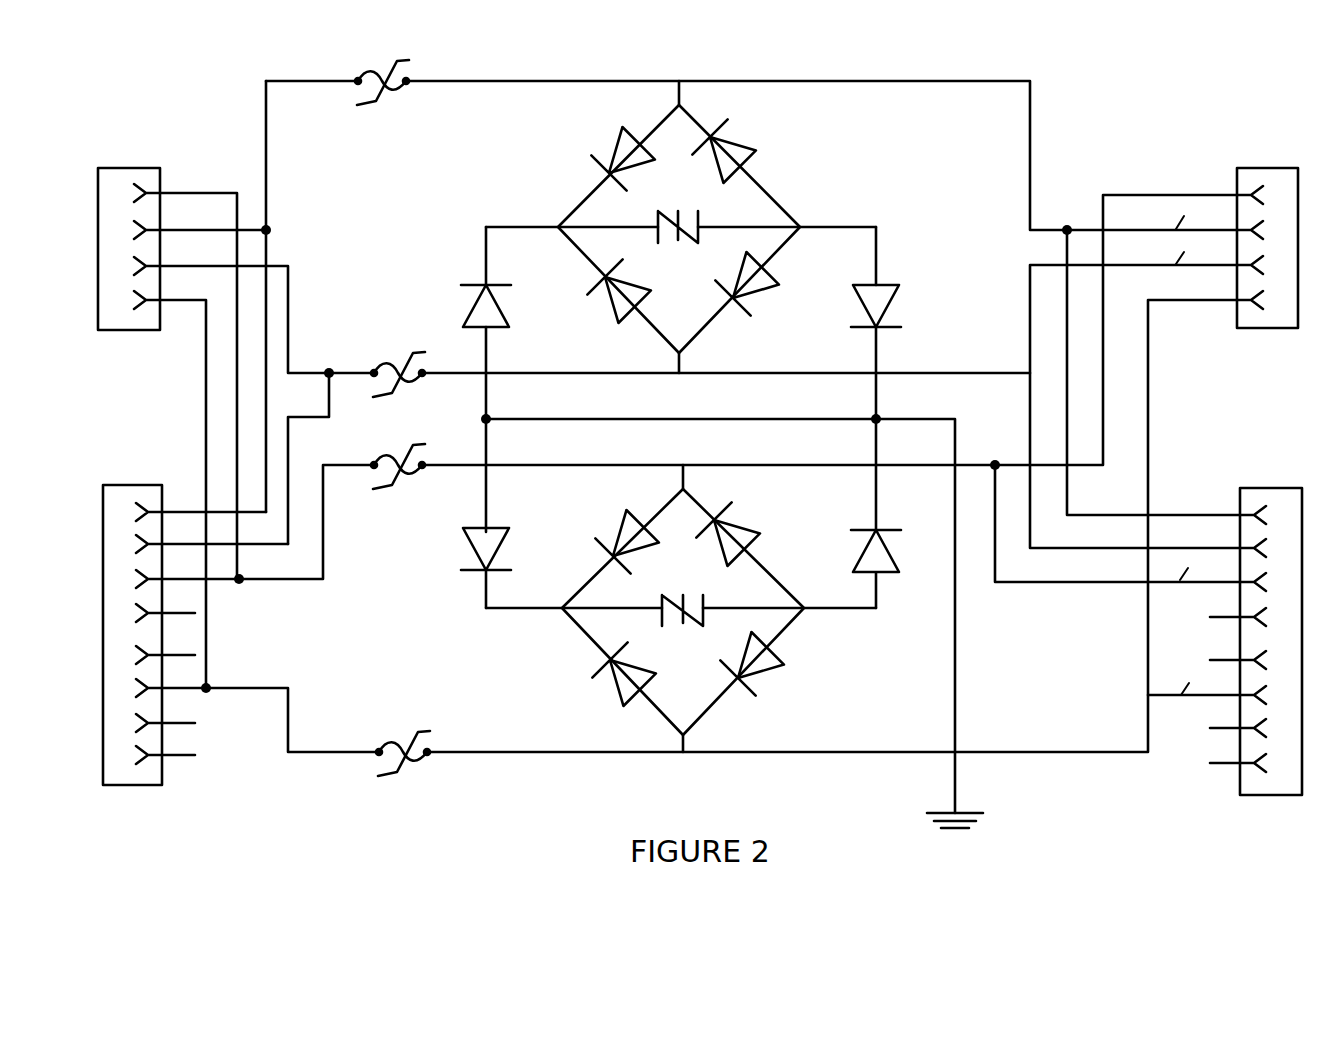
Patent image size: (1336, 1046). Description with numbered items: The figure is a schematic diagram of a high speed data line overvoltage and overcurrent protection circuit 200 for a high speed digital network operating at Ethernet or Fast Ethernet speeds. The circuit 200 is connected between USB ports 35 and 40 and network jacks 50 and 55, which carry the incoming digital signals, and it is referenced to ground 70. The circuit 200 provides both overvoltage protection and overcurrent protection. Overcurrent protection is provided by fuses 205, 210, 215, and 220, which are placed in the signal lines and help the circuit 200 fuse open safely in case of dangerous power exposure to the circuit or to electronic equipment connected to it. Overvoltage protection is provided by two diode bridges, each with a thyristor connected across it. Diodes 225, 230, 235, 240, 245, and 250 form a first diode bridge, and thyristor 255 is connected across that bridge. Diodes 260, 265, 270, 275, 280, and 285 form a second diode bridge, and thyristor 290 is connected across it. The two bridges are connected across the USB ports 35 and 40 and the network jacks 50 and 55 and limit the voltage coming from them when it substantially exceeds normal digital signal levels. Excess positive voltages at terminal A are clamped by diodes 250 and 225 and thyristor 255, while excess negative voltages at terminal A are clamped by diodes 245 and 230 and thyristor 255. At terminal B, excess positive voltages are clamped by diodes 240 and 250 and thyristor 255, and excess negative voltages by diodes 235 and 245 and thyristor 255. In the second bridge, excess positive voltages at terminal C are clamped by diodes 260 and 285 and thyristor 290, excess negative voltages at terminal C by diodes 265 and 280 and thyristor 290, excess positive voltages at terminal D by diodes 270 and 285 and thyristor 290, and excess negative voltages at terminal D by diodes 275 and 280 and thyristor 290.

The high speed data line overvoltage and overcurrent protection circuit 200 is at (700, 459).
The fuse 205 is at (378, 62).
The fuse 210 is at (378, 365).
The fuse 215 is at (383, 458).
The fuse 220 is at (403, 740).
The diode 225 is at (623, 158).
The diode 230 is at (724, 151).
The diode 235 is at (747, 283).
The diode 240 is at (619, 291).
The diode 245 is at (486, 306).
The diode 250 is at (876, 306).
The thyristor 255 is at (667, 210).
The diode 260 is at (624, 674).
The diode 265 is at (752, 663).
The diode 270 is at (627, 541).
The diode 275 is at (728, 534).
The diode 280 is at (486, 549).
The diode 285 is at (876, 551).
The thyristor 290 is at (672, 595).
The USB port 35 is at (129, 249).
The USB port 40 is at (1267, 248).
The RJ-45 jack 50 is at (132, 635).
The RJ-45 jack 55 is at (1271, 641).
The ground 70 is at (958, 838).